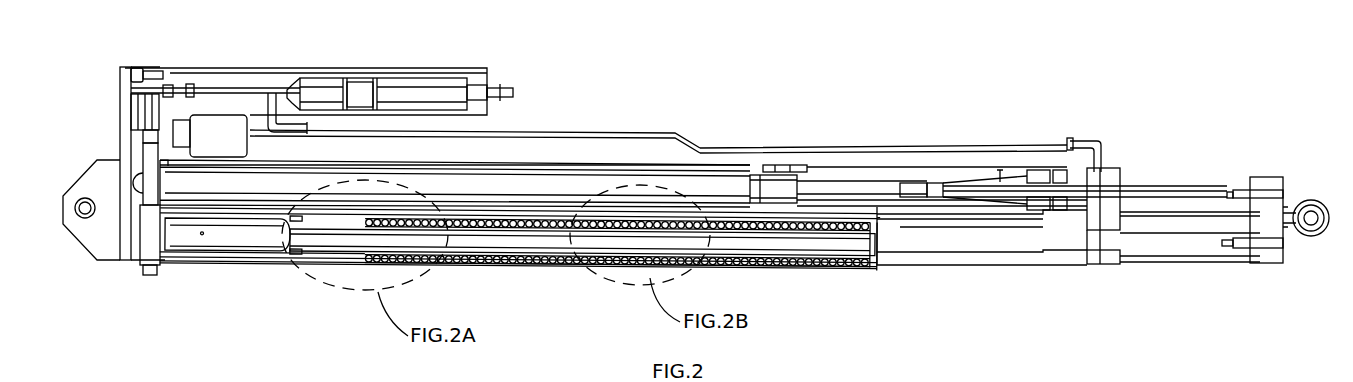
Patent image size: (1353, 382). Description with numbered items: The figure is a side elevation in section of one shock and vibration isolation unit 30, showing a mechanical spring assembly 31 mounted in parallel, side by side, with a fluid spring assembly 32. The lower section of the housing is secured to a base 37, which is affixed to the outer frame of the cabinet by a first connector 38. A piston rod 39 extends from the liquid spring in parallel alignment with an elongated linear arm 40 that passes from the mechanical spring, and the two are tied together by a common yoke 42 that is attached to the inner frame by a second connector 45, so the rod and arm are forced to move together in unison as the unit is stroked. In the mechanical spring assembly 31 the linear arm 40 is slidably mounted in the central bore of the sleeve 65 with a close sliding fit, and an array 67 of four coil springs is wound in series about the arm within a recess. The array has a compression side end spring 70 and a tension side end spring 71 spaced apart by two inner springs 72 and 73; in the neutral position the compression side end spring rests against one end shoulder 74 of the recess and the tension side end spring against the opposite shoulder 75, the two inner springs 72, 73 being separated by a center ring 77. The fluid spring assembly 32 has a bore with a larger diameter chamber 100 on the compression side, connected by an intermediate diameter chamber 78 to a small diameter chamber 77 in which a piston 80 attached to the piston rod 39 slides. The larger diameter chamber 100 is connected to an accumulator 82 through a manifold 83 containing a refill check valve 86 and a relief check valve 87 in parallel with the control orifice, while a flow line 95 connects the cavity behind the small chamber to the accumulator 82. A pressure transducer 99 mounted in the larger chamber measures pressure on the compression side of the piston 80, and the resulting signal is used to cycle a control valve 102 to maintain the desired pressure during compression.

The shock and vibration isolation unit 30 is at (846, 131).
The mechanical spring assembly 31 is at (916, 278).
The fluid spring assembly 32 is at (615, 156).
The base 37 is at (117, 227).
The first connector 38 is at (79, 161).
The piston rod 39 is at (1193, 190).
The linear arm 40 is at (1177, 258).
The yoke 42 is at (1268, 177).
The second connector 45 is at (1312, 246).
The sleeve 65 is at (1127, 263).
The array of coil springs 67 is at (567, 256).
The compression side end spring 70 is at (368, 259).
The tension side end spring 71 is at (843, 262).
The inner spring 72 is at (480, 255).
The inner spring 73 is at (752, 258).
The end shoulder 74 is at (358, 259).
The opposite shoulder 75 is at (872, 262).
The small diameter chamber 77 is at (913, 190).
The intermediate diameter chamber 78 is at (775, 183).
The piston 80 is at (937, 187).
The accumulator 82 is at (403, 73).
The manifold 83 is at (129, 171).
The refill check valve 86 is at (146, 106).
The relief check valve 87 is at (133, 122).
The flow line 95 is at (715, 147).
The pressure transducer 99 is at (145, 265).
The larger diameter chamber 100 is at (470, 182).
The control valve 102 is at (222, 122).